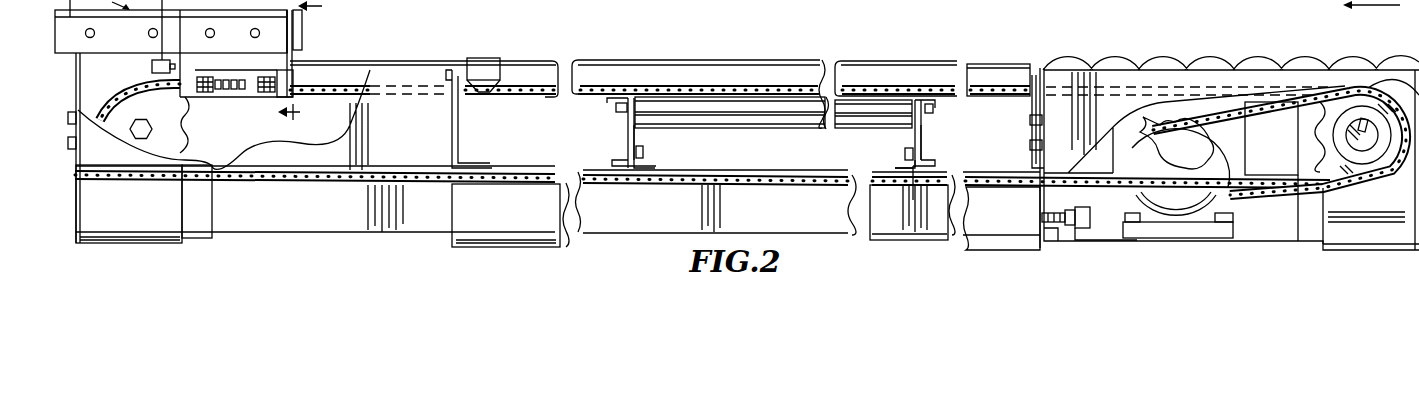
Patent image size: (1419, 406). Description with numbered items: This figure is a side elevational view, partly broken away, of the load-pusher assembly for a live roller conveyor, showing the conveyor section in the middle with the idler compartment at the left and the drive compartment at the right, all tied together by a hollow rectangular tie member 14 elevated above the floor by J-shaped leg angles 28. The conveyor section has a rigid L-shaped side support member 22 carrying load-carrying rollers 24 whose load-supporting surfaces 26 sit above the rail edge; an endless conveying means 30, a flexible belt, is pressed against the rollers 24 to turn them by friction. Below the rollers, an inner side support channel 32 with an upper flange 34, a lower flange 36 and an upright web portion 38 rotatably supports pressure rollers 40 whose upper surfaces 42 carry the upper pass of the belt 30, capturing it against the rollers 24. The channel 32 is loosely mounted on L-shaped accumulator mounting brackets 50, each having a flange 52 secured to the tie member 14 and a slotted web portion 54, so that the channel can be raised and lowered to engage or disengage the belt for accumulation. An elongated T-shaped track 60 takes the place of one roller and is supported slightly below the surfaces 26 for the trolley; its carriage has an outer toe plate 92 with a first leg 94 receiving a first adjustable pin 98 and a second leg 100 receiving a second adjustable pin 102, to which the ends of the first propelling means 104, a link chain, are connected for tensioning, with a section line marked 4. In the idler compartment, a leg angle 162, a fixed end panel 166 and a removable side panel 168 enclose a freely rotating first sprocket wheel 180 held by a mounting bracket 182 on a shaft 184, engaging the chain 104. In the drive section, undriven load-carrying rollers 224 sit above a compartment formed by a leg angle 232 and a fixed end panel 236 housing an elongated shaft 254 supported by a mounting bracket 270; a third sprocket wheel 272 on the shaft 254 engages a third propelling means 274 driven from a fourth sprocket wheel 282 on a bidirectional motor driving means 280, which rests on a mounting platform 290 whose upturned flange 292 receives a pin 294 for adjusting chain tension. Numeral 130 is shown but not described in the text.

The section line 4- 4 is at (301, 61).
The tie member 14 is at (258, 216).
The side support member 22 is at (462, 130).
The load-carrying roller 24 is at (488, 58).
The load-supporting surface 26 is at (710, 61).
The leg angle 28 is at (562, 244).
The endless conveying means 30 is at (678, 97).
The inner side support channel 32 is at (618, 114).
The upper flange 34 is at (612, 101).
The lower flange 36 is at (618, 160).
The upright web portion 38 is at (612, 122).
The pressure roller 40 is at (755, 112).
The upper surface 42 is at (752, 95).
The accumulator mounting bracket 50 is at (650, 159).
The flange 52 is at (910, 188).
The web portion 54 is at (644, 140).
The track 60 is at (394, 61).
The outer toe plate 92 is at (302, 22).
The first downwardly projecting leg 94 is at (286, 81).
The first adjustable pin 98 is at (258, 94).
The second downwardly projecting leg 100 is at (183, 100).
The second adjustable pin 102 is at (236, 93).
The first propelling means 104 is at (77, 66).
The mounting bracket 130 is at (304, 28).
The leg angle 162 is at (133, 219).
The fixed end panel 166 is at (82, 72).
The removable side panel 168 is at (90, 158).
The first sprocket wheel 180 is at (120, 125).
The mounting bracket 182 is at (205, 200).
The shaft 184 is at (143, 118).
The load-carrying roller 224 is at (1090, 44).
The leg angle 232 is at (1370, 241).
The fixed end panel 236 is at (1410, 68).
The elongated shaft 254 is at (1343, 142).
The mounting bracket 270 is at (1313, 232).
The third sprocket wheel 272 is at (1312, 123).
The third propelling means 274 is at (1268, 103).
The driving means 280 is at (1192, 214).
The fourth sprocket wheel 282 is at (1168, 151).
The mounting platform 290 is at (1135, 242).
The upturned flange 292 is at (1070, 230).
The pin 294 is at (1048, 235).